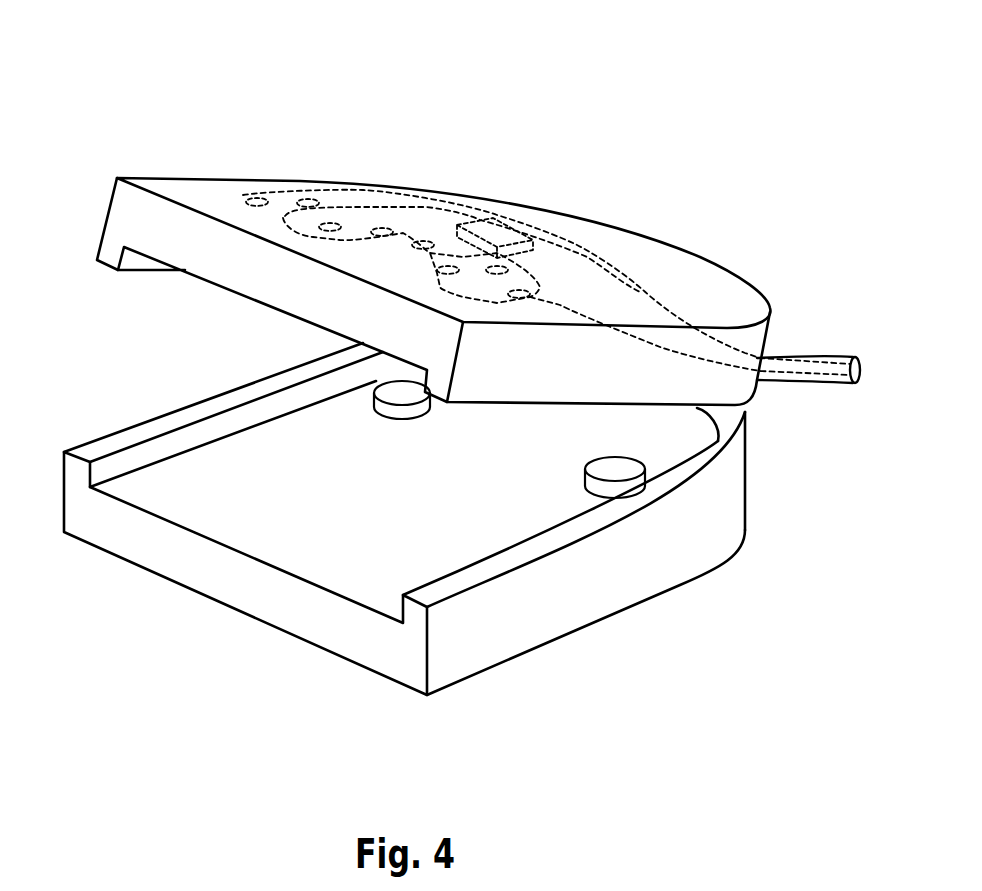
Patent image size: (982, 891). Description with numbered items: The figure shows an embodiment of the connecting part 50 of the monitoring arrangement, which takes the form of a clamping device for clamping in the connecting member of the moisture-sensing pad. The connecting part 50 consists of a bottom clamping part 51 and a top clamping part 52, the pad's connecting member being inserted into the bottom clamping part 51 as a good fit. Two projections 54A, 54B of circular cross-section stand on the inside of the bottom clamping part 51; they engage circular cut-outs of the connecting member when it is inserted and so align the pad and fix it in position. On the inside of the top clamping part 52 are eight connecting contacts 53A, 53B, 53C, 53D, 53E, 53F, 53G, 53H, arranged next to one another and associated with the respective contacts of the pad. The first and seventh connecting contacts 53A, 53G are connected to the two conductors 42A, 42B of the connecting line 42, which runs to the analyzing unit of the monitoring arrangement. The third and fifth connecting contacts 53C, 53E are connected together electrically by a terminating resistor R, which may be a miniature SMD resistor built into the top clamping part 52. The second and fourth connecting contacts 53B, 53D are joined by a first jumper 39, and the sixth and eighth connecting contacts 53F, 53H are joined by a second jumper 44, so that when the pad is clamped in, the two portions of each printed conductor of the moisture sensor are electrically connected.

The connecting part 50 is at (151, 115).
The bottom clamping part 51 is at (607, 567).
The top clamping part 52 is at (710, 290).
The first connecting contact 53A is at (252, 198).
The second connecting contact 53B is at (303, 200).
The third connecting contact 53C is at (327, 225).
The fourth connecting contact 53D is at (378, 228).
The fifth connecting contact 53E is at (418, 242).
The sixth connecting contact 53F is at (443, 267).
The seventh connecting contact 53G is at (507, 270).
The eighth connecting contact 53H is at (575, 307).
The terminating resistor R is at (497, 223).
The first jumper 39 is at (312, 228).
The second jumper 44 is at (445, 297).
The connecting line 42 is at (807, 384).
The first conductor 42A is at (646, 300).
The second conductor 42B is at (603, 263).
The first projection 54A is at (388, 390).
The second projection 54B is at (627, 468).